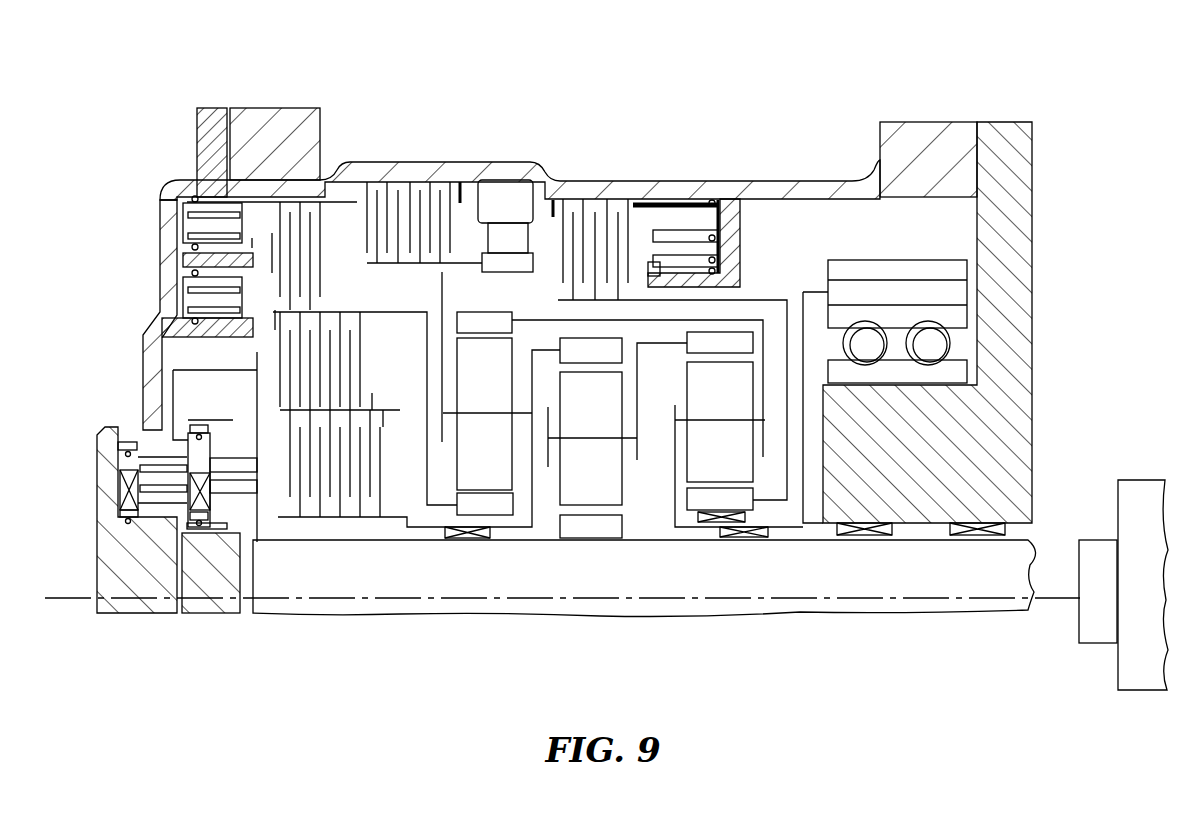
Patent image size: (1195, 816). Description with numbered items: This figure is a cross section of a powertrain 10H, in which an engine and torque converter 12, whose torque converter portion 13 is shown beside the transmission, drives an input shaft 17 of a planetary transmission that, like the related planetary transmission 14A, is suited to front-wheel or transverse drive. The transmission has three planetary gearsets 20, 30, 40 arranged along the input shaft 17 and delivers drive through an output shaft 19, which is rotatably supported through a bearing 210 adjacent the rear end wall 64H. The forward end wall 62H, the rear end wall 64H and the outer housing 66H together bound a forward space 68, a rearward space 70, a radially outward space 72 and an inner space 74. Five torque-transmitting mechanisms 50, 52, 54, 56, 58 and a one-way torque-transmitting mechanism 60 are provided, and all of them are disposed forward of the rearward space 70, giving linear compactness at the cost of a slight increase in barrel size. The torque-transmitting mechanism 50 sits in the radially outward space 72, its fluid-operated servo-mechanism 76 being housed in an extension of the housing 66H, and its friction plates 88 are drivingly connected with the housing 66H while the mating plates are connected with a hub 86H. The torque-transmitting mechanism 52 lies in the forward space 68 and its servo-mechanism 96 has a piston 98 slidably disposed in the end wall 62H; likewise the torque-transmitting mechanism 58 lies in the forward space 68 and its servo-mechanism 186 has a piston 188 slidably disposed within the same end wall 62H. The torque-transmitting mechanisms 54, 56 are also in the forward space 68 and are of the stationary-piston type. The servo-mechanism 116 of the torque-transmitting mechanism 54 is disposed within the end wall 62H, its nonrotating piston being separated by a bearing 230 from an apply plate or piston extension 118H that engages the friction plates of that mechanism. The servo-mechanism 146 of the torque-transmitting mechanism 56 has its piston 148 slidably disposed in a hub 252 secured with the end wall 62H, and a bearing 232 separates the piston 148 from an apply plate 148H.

The powertrain 10H is at (130, 138).
The planetary transmission 14A is at (608, 98).
The piston 188 is at (175, 182).
The servo-mechanism 186 is at (173, 226).
The fluid-operated piston 98 is at (272, 258).
The servo-mechanism 96 is at (172, 297).
The forward space 68 is at (353, 290).
The torque-transmitting mechanism 58 is at (385, 160).
The one-way torque-transmitting mechanism 60 is at (512, 184).
The radially outward space 72 is at (549, 197).
The friction plates 88 is at (618, 205).
The torque-transmitting mechanism 50 is at (653, 178).
The fluid-operated servo-mechanism 76 is at (724, 190).
The outer housing 66H is at (768, 195).
The rearward space 70 is at (857, 238).
The hub 86H is at (767, 297).
The output shaft 19 is at (952, 290).
The bearing 210 is at (960, 347).
The housing wall 64H is at (1022, 468).
The forward end wall 62H is at (143, 333).
The torque-transmitting mechanism 52 is at (271, 302).
The torque-transmitting mechanism 54 is at (205, 387).
The apply plate or piston extension 118H is at (217, 373).
The apply plate 148H is at (172, 440).
The piston 148 is at (137, 448).
The hub 252 is at (175, 428).
The servo-mechanism 116 is at (117, 488).
The bearing 230 is at (127, 500).
The bearing 232 is at (200, 530).
The servo-mechanism 146 is at (182, 530).
The torque-transmitting mechanism 56 is at (307, 520).
The planetary gearset 20 is at (508, 545).
The inner space 74 is at (543, 490).
The planetary gearset 30 is at (590, 545).
The planetary gearset 40 is at (708, 545).
The input shaft 17 is at (915, 575).
The torque converter 13 is at (1092, 536).
The engine and torque converter 12 is at (1146, 477).